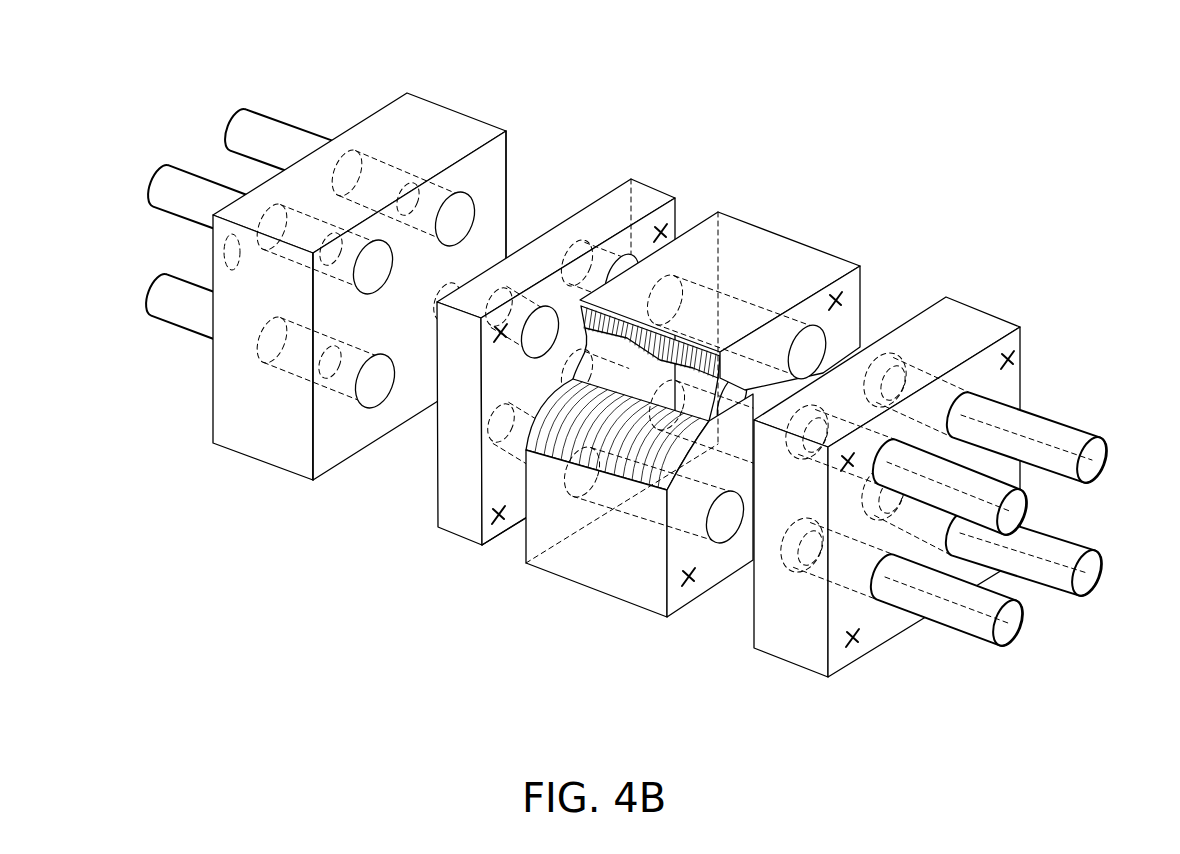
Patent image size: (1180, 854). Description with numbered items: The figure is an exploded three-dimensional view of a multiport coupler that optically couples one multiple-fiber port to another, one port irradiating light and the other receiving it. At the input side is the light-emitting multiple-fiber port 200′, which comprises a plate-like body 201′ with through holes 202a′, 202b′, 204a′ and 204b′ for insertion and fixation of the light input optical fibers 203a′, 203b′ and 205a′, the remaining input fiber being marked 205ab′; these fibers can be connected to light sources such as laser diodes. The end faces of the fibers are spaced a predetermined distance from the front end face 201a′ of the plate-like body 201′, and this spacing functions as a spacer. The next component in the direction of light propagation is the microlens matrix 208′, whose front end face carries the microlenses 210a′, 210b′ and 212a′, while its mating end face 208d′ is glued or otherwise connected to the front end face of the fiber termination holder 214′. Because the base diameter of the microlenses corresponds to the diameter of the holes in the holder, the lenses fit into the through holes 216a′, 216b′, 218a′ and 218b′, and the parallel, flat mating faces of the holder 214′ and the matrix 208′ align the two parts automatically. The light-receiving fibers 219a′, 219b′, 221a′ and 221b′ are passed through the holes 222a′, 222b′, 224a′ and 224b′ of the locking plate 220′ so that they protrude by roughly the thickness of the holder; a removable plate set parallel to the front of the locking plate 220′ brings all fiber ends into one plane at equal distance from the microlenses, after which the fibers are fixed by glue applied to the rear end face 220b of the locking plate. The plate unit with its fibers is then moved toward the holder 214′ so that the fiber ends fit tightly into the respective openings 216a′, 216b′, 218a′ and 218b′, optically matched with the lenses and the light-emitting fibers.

The light-emitting multiple-fiber port 200′ is at (422, 90).
The plate-like body 201′ is at (510, 143).
The front end face 201a′ is at (330, 453).
The through hole 202a′ is at (353, 282).
The through hole 202b′ is at (473, 212).
The light input optical fiber 203a′ is at (168, 183).
The light input optical fiber 203b′ is at (248, 133).
The through hole 204a′ is at (384, 395).
The through hole 204b′ is at (437, 292).
The light input optical fiber 205a′ is at (175, 310).
The bore 205ab′ is at (230, 257).
The microlens matrix 208′ is at (663, 177).
The mating end face 208d′ is at (482, 545).
The microlens 210a′ is at (487, 517).
The microlens 210b′ is at (633, 257).
The microlens 212a′ is at (522, 455).
The fiber termination holder 214′ is at (803, 225).
The through hole 216a′ is at (705, 430).
The through hole 216b′ is at (745, 390).
The through hole 218a′ is at (705, 523).
The through hole 218b′ is at (815, 378).
The locking plate 220′ is at (933, 320).
The rear end face 220b is at (845, 480).
The hole 222a′ is at (850, 630).
The hole 222b′ is at (983, 390).
The hole 224a′ is at (867, 593).
The hole 224b′ is at (950, 520).
The light-receiving fiber 219a′ is at (947, 500).
The light-receiving fiber 219b′ is at (1050, 417).
The light-receiving fiber 221a′ is at (1023, 627).
The light-receiving fiber 221b′ is at (1062, 548).